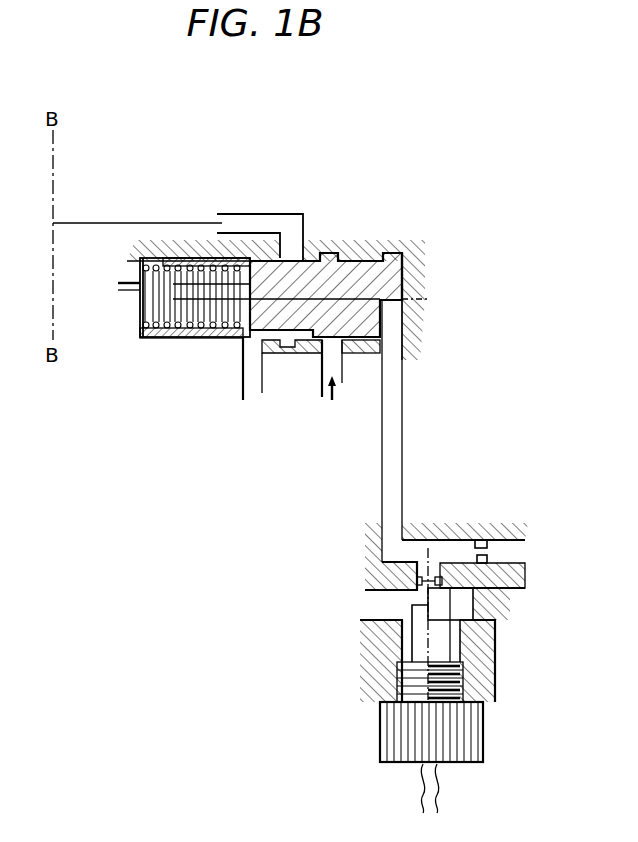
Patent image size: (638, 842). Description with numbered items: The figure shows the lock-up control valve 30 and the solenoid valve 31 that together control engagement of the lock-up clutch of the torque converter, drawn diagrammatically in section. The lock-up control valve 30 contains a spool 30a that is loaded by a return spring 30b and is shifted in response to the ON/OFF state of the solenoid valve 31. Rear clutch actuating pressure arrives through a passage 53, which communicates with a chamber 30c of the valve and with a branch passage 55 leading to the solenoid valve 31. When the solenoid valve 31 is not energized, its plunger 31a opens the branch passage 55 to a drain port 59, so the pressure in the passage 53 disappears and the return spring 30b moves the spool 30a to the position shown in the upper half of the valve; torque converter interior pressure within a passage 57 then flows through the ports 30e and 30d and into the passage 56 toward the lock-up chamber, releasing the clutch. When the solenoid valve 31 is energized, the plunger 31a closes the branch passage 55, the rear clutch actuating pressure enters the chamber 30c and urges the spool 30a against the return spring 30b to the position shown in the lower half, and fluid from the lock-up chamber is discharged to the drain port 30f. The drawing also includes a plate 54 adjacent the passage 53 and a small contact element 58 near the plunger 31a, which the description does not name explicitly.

The lock-up control valve 30 is at (374, 228).
The spool 30a is at (200, 338).
The return spring 30b is at (148, 312).
The chamber 30c is at (395, 311).
The port 30d is at (302, 237).
The port 30e is at (322, 356).
The drain port 30f is at (252, 342).
The solenoid valve 31 is at (386, 750).
The plunger 31a is at (455, 605).
The passage 53 is at (402, 462).
The plate 54 is at (482, 540).
The branch passage 55 is at (440, 567).
The passage 56 is at (163, 222).
The passage 57 is at (343, 380).
The contact 58 is at (425, 581).
The drain port 59 is at (372, 618).